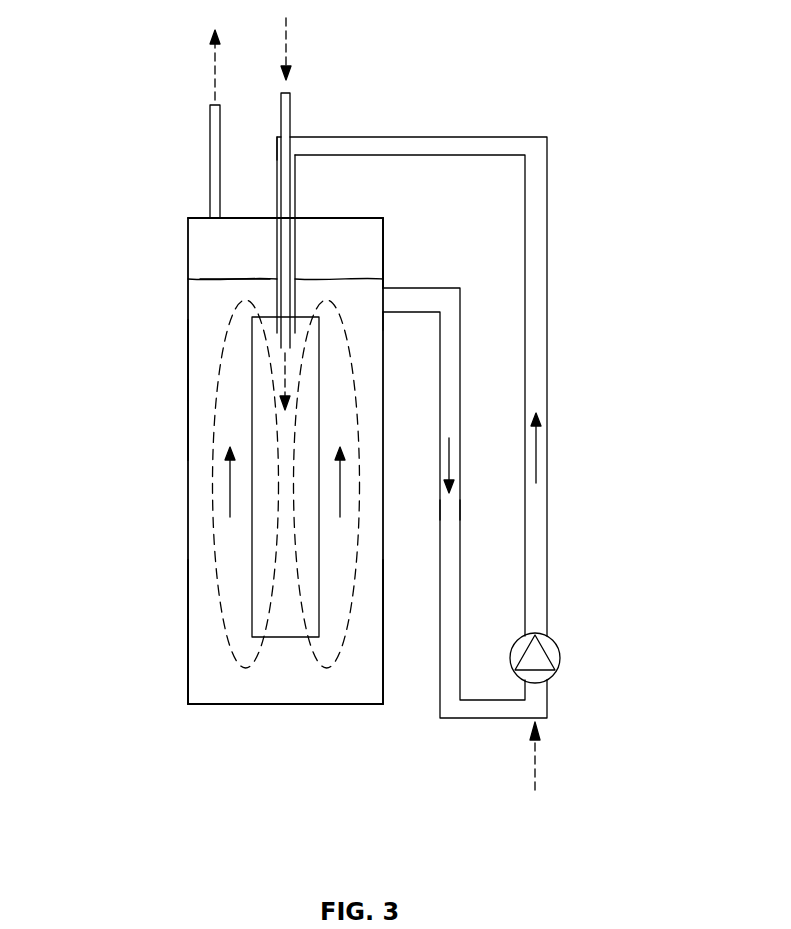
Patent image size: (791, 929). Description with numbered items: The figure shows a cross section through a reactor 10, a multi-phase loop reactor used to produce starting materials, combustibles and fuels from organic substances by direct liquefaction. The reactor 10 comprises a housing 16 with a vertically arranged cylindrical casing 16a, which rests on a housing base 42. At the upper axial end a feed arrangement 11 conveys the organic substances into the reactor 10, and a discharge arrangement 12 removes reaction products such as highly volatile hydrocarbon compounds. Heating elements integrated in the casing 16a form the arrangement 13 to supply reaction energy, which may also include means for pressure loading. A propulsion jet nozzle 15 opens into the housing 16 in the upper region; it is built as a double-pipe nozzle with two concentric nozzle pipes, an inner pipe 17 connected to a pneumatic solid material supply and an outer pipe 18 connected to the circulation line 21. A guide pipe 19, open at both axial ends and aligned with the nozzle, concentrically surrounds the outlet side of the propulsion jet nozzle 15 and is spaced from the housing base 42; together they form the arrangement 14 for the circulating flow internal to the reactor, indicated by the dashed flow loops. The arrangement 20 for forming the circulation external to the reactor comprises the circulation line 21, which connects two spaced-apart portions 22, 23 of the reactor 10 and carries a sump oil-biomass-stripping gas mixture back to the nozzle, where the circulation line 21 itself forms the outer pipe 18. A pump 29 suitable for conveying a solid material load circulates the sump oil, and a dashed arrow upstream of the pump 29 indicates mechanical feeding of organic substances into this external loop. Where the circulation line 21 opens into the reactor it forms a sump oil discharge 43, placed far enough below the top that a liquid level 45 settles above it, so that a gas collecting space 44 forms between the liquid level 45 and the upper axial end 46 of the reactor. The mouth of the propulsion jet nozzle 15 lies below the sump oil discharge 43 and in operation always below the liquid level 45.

The reactor 10 is at (188, 600).
The feed arrangement 11 is at (293, 125).
The discharge arrangement 12 is at (209, 158).
The arrangement to supply reaction energy 13 is at (188, 412).
The arrangement for forming the circulating flow internal to the reactor 14 is at (308, 260).
The propulsion jet nozzle 15 is at (275, 193).
The housing 16 is at (188, 358).
The cylindrical casing 16a is at (188, 650).
The inner pipe 17 is at (280, 110).
The outer pipe 18 is at (277, 147).
The guide pipe 19 is at (252, 427).
The arrangement for forming the circulation external to the reactor 20 is at (572, 425).
The circulation line 21 is at (548, 277).
The portion 22 is at (372, 300).
The portion 23 is at (362, 670).
The pump 29 is at (560, 650).
The housing base 42 is at (277, 705).
The sump oil discharge 43 is at (382, 300).
The gas collecting space 44 is at (195, 233).
The liquid level 45 is at (217, 278).
The upper axial end 46 is at (367, 218).